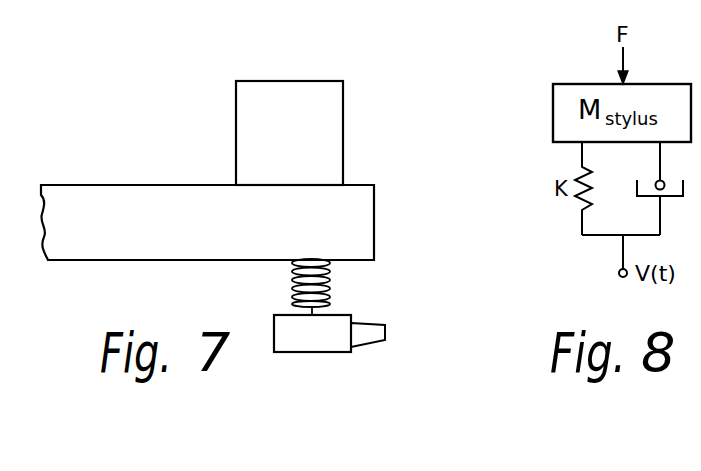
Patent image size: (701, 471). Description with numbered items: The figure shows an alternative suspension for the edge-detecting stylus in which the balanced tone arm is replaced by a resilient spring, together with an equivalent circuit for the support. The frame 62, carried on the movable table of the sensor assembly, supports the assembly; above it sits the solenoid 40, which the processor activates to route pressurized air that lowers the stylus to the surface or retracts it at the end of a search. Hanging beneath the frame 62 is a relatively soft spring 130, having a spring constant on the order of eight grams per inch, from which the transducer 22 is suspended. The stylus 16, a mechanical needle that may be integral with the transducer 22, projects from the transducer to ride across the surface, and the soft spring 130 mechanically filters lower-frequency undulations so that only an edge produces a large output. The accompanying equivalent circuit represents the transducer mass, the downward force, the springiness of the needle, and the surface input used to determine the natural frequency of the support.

The stylus 16 is at (397, 363).
The transducer 22 is at (318, 352).
The solenoid 40 is at (332, 125).
The frame 62 is at (367, 212).
The spring 130 is at (327, 298).